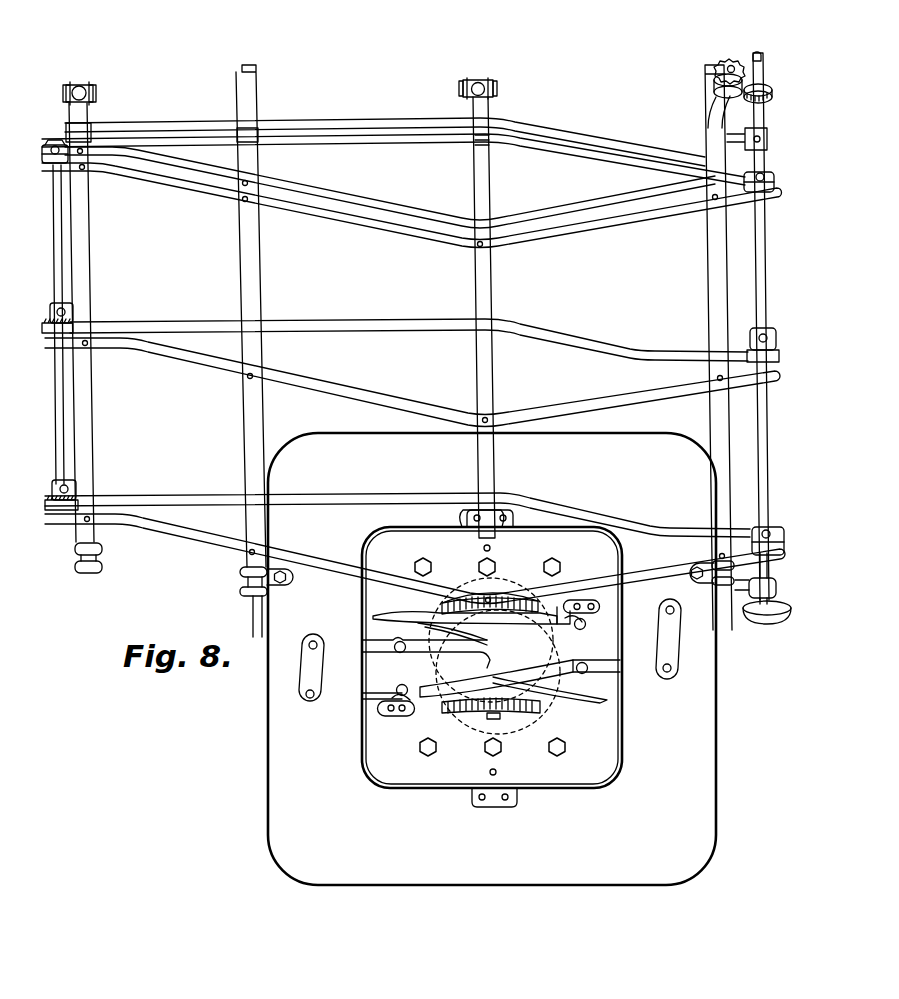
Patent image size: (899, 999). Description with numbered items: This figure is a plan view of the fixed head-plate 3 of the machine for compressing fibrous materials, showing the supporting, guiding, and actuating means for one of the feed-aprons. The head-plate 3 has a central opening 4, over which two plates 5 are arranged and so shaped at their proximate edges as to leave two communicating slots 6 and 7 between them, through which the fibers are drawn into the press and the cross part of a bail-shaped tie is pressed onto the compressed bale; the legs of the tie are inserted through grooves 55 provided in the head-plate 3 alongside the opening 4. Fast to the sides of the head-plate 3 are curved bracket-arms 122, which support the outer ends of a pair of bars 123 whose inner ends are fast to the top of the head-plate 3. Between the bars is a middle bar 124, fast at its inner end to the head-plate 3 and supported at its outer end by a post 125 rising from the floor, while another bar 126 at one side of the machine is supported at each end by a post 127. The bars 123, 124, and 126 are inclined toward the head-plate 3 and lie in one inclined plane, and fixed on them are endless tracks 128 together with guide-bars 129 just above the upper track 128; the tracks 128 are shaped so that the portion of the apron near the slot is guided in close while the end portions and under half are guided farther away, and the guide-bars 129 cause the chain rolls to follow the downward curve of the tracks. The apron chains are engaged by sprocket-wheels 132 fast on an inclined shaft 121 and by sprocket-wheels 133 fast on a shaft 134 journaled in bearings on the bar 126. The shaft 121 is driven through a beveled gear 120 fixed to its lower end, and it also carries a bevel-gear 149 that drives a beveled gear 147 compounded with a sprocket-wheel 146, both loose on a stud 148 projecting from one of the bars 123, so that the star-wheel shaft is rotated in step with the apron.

The head-plate 3 is at (492, 659).
The central opening 4 is at (457, 735).
The plates 5 is at (490, 658).
The slot 6 is at (481, 640).
The slot 7 is at (491, 688).
The grooves 55 is at (578, 600).
The beveled gear 120 is at (770, 628).
The inclined shaft 121 is at (767, 257).
The curved bracket-arms 122 is at (258, 80).
The bars 123 is at (240, 241).
The middle bar 124 is at (491, 276).
The post 125 is at (484, 80).
The bar 126 is at (91, 249).
The post 127 is at (97, 93).
The endless tracks 128 is at (446, 150).
The guide-bars 129 is at (372, 116).
The sprocket-wheels 132 is at (774, 181).
The sprocket-wheels 133 is at (44, 146).
The shaft 134 is at (57, 418).
The sprocket-wheel 146 is at (728, 62).
The beveled gear 147 is at (716, 86).
The stud 148 is at (757, 58).
The bevel-gear 149 is at (766, 85).